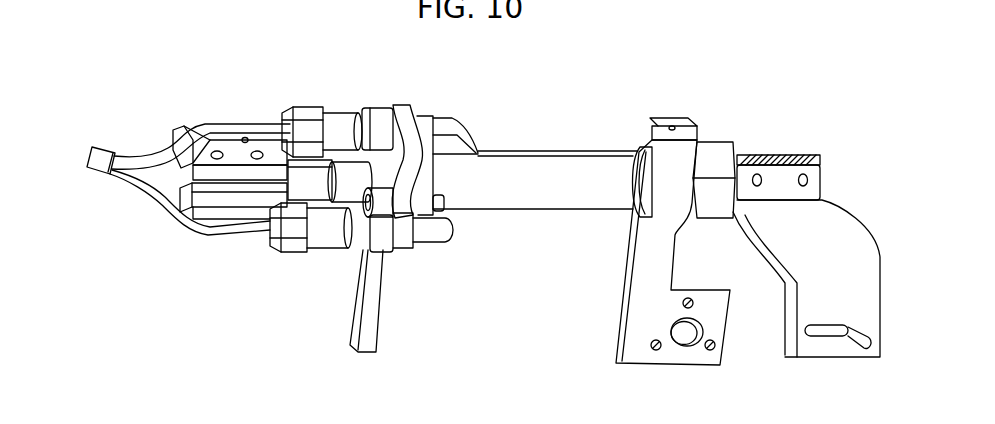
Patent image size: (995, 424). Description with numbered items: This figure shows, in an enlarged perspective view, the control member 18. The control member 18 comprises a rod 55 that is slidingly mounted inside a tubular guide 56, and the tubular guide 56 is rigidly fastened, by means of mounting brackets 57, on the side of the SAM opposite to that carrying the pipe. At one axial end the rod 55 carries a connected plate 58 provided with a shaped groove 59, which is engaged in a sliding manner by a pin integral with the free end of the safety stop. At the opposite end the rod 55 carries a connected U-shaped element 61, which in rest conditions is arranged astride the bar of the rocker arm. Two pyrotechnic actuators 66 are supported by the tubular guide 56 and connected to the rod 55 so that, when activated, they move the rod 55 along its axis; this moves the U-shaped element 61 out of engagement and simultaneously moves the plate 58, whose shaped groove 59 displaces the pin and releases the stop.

The control member 18 is at (543, 230).
The rod 55 is at (317, 185).
The tubular guide 56 is at (540, 178).
The mounting brackets 57 is at (376, 312).
The plate 58 is at (842, 240).
The shaped groove 59 is at (845, 336).
The U-shaped element 61 is at (186, 128).
The pyrotechnic actuators 66 is at (335, 125).